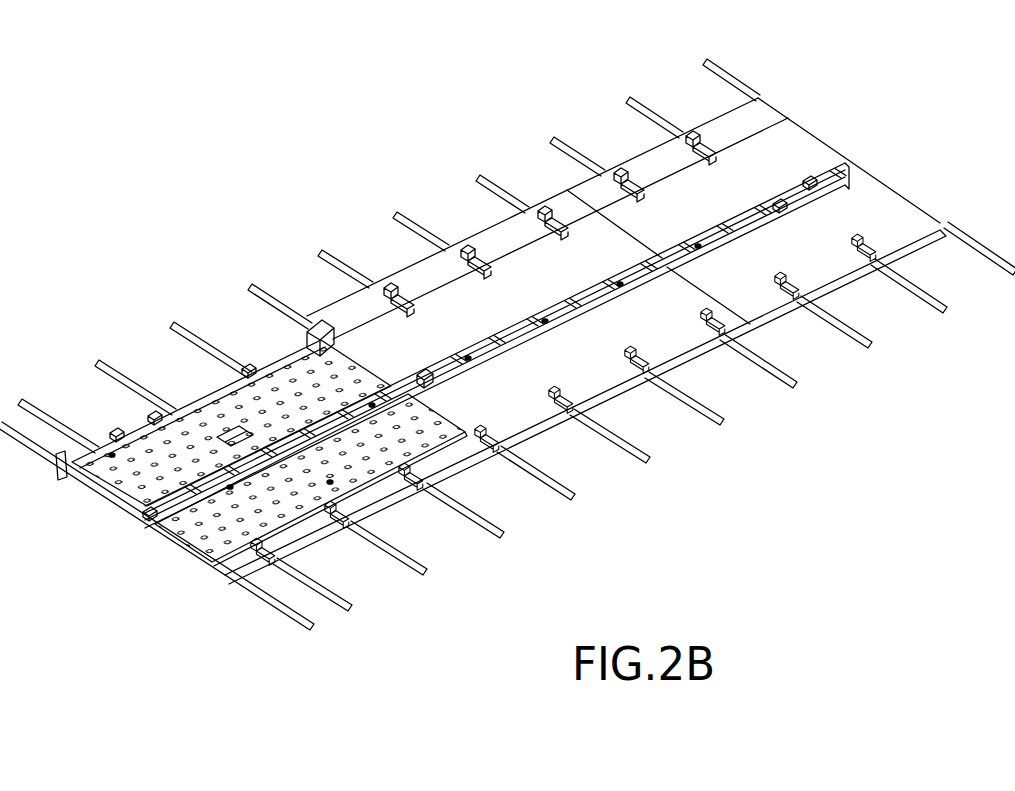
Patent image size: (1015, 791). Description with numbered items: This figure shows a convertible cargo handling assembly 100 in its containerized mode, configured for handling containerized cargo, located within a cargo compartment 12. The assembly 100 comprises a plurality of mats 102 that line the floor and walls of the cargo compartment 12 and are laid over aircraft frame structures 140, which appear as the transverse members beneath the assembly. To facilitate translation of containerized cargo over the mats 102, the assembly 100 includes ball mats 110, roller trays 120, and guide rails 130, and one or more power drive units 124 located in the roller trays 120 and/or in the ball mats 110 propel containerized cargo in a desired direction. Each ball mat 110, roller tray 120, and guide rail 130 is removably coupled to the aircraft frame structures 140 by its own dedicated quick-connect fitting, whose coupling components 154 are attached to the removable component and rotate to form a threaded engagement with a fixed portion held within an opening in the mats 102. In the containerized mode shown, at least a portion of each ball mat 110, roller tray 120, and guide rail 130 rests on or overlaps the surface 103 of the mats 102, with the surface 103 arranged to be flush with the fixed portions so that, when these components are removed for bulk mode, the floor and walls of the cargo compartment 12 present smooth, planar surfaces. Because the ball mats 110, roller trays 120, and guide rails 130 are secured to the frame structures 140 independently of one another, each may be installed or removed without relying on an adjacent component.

The cargo compartment 12 is at (156, 132).
The convertible cargo handling assembly 100 is at (378, 117).
The mat 102 is at (510, 262).
The surface of mats 103 is at (585, 366).
The ball mat 110 is at (288, 360).
The roller tray 120 is at (486, 347).
The power drive unit 124 is at (423, 381).
The guide rail 130 is at (400, 296).
The aircraft frame structure 140 is at (631, 99).
The coupling component 154 is at (393, 297).